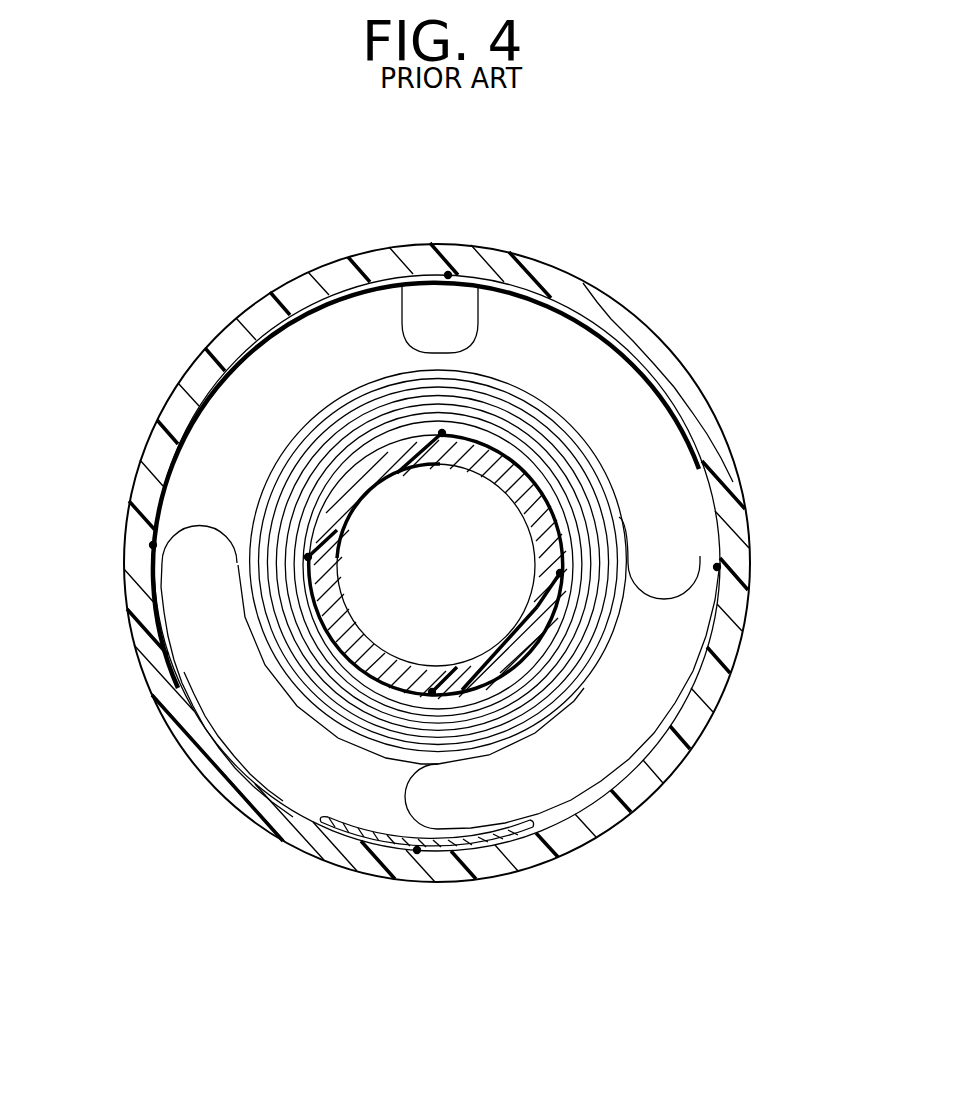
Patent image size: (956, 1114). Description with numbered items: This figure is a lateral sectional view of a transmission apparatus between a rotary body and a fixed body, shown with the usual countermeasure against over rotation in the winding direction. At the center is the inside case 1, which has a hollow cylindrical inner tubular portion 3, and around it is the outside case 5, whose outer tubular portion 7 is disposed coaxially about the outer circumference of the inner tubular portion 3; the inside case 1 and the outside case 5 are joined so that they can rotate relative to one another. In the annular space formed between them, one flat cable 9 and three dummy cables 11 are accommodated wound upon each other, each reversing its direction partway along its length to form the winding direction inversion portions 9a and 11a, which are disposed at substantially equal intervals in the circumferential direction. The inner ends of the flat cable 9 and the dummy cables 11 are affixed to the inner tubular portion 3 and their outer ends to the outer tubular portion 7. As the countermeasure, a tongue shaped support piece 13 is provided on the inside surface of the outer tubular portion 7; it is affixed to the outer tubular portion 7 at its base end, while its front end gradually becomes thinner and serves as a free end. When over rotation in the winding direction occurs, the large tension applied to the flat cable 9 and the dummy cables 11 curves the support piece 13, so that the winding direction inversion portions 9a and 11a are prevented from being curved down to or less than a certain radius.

The inside case 1 is at (527, 578).
The inner tubular portion 3 is at (477, 458).
The outside case 5 is at (710, 407).
The outer tubular portion 7 is at (653, 353).
The flat cable 9 is at (560, 822).
The winding direction inversion portion 9a is at (403, 794).
The dummy cables 11 is at (387, 272).
The winding direction inversion portions 11a is at (478, 330).
The tongue shaped support piece 13 is at (417, 850).